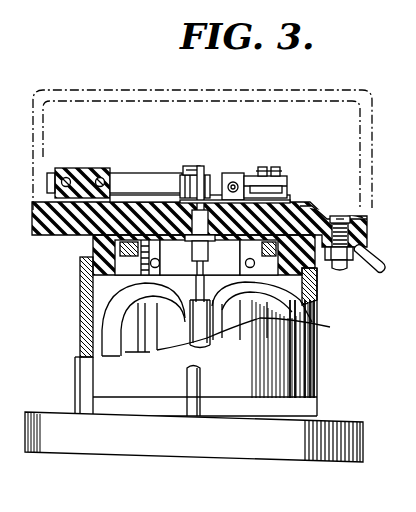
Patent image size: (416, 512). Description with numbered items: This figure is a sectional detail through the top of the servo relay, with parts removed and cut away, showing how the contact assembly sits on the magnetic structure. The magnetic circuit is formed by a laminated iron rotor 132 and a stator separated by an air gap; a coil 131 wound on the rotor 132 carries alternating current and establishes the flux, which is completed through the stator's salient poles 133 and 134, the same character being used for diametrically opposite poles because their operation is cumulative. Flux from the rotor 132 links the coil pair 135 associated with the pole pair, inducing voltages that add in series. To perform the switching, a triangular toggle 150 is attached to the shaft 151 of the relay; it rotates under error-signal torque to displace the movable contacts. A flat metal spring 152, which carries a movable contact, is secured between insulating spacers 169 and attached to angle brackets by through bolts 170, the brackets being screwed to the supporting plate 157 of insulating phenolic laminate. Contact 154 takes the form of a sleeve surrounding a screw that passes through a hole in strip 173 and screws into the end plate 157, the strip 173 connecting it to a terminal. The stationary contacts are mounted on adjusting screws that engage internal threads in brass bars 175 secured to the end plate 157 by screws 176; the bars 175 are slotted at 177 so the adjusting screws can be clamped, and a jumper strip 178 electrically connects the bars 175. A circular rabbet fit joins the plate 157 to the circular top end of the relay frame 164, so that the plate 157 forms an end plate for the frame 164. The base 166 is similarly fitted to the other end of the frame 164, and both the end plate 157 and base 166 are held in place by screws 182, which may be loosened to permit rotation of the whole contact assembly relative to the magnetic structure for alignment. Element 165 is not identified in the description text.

The coil 131 is at (165, 340).
The rotor 132 is at (208, 332).
The salient pole 133 is at (310, 335).
The salient pole 134 is at (130, 326).
The coil pair 135 is at (318, 293).
The triangular toggle 150 is at (181, 184).
The shaft 151 is at (205, 170).
The spring 152 is at (134, 175).
The contact 154 is at (233, 172).
The supporting plate 157 is at (32, 222).
The relay frame 164 is at (78, 358).
The bearing housing 165 is at (80, 298).
The base 166 is at (233, 460).
The insulating spacers 169 is at (60, 170).
The through bolts 170 is at (89, 179).
The strip 173 is at (306, 203).
The bars 175 is at (250, 170).
The screws 176 is at (273, 167).
The slot 177 is at (283, 191).
The jumper strip 178 is at (282, 176).
The screws 182 is at (187, 406).